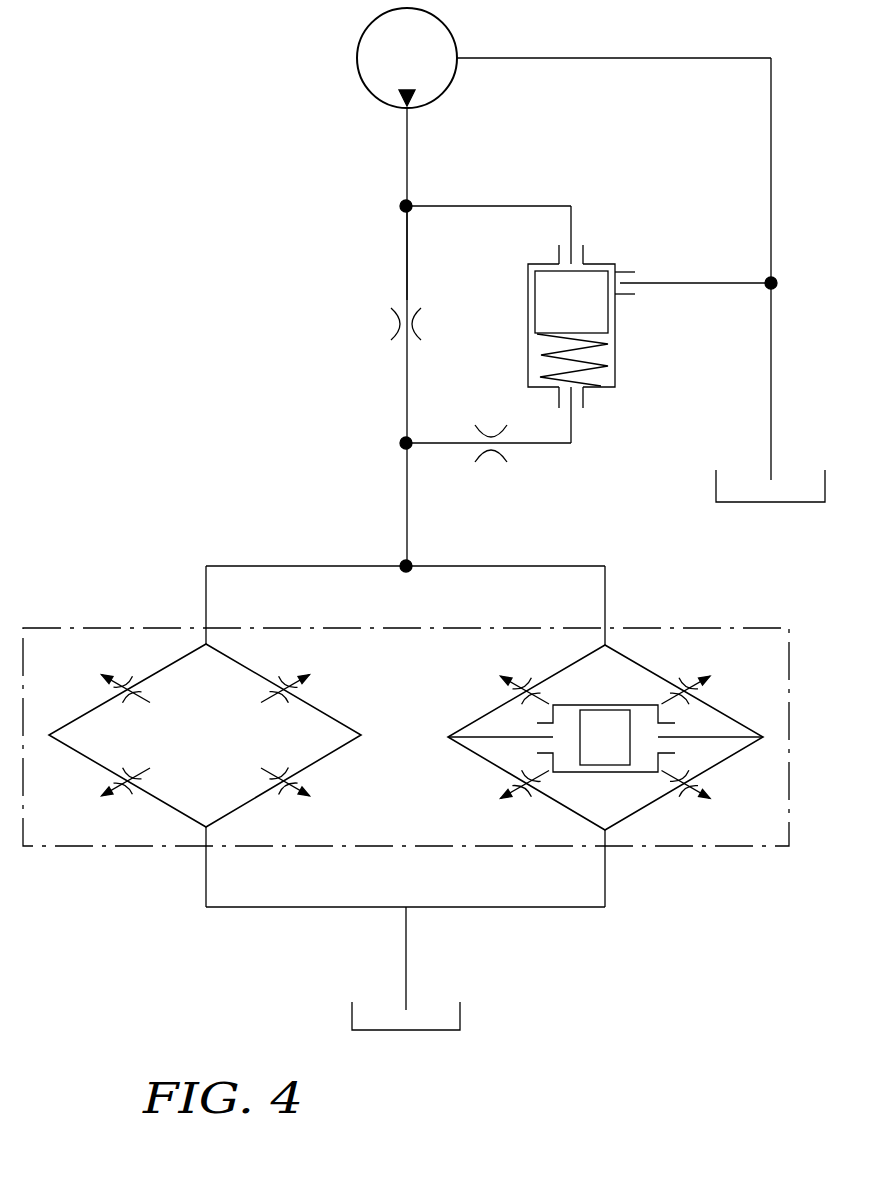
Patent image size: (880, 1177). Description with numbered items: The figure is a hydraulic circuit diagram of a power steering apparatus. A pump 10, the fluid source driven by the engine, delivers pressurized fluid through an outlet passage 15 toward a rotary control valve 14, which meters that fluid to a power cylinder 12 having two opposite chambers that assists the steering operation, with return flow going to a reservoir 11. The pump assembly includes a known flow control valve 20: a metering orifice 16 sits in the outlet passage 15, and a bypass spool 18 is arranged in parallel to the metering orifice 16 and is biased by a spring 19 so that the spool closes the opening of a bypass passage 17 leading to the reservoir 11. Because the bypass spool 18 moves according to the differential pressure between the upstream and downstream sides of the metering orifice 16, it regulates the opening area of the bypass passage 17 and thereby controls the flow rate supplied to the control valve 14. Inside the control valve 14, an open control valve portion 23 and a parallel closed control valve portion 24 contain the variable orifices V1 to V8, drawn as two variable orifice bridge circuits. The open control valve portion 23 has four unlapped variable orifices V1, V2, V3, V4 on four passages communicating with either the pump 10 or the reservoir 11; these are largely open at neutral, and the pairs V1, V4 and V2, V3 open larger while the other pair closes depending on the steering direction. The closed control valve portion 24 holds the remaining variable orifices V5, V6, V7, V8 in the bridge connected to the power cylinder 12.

The pump 10 is at (357, 60).
The reservoir 11 is at (770, 503).
The power cylinder 12 is at (620, 773).
The rotary control valve 14 is at (84, 626).
The outlet passage 15 is at (406, 249).
The metering orifice 16 is at (395, 316).
The bypass passage 17 is at (693, 254).
The bypass spool 18 is at (545, 292).
The spring 19 is at (584, 370).
The flow control valve 20 is at (588, 306).
The open control valve portion 23 is at (167, 656).
The closed control valve portion 24 is at (640, 652).
The unlapped variable orifice V1 is at (117, 672).
The unlapped variable orifice V2 is at (292, 672).
The unlapped variable orifice V3 is at (117, 800).
The unlapped variable orifice V4 is at (292, 800).
The variable orifice V5 is at (516, 674).
The variable orifice V6 is at (693, 674).
The variable orifice V7 is at (516, 802).
The variable orifice V8 is at (693, 802).